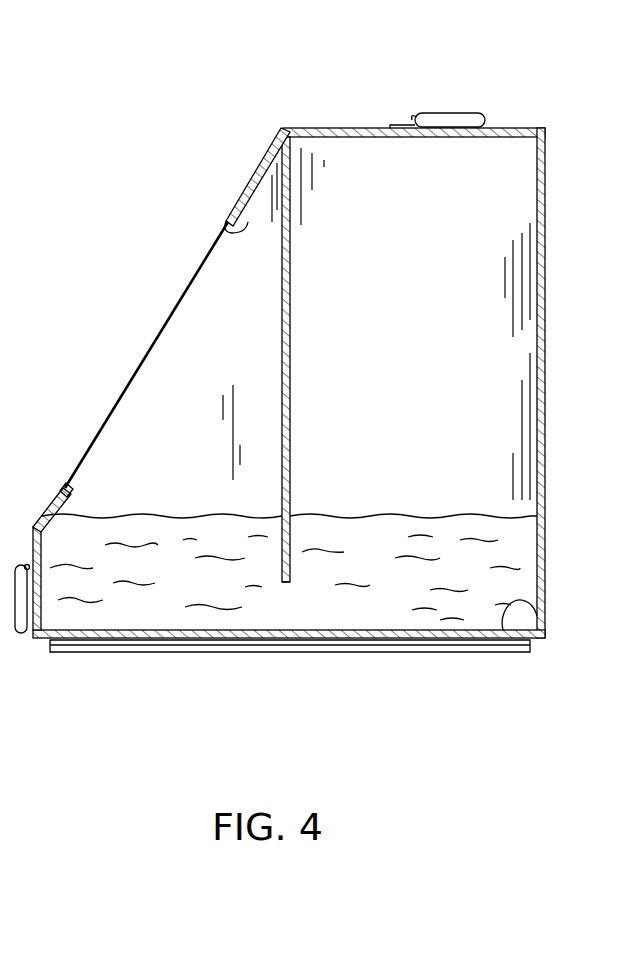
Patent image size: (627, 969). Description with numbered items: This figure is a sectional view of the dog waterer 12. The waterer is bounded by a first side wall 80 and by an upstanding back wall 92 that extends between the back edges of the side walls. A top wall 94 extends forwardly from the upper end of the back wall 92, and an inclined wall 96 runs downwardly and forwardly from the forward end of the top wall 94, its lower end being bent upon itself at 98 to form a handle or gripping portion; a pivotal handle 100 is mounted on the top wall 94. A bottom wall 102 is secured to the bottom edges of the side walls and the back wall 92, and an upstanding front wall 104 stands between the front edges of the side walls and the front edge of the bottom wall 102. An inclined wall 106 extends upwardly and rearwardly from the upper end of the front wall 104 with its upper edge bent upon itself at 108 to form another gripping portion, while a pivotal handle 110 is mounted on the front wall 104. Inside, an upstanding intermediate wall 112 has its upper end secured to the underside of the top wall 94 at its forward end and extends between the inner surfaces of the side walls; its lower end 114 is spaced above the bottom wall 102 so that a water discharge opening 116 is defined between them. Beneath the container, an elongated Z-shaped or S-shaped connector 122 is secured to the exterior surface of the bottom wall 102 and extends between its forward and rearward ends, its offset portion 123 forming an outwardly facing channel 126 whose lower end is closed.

The dog waterer 12 is at (412, 92).
The first side wall 80 is at (321, 433).
The back wall 92 is at (545, 388).
The top wall 94 is at (418, 137).
The inclined wall 96 is at (250, 183).
The bent lower end of inclined wall 98 is at (243, 226).
The pivotal handle 100 is at (457, 118).
The bottom wall 102 is at (333, 621).
The front wall 104 is at (40, 586).
The inclined wall 106 is at (43, 507).
The bent upper edge of inclined wall 108 is at (69, 489).
The pivotal handle 110 is at (20, 633).
The intermediate wall 112 is at (290, 355).
The lower end of intermediate wall 114 is at (289, 582).
The water discharge opening 116 is at (287, 600).
The Z-shaped connector 122 is at (465, 653).
The offset portion 123 is at (182, 651).
The channel 126 is at (543, 619).